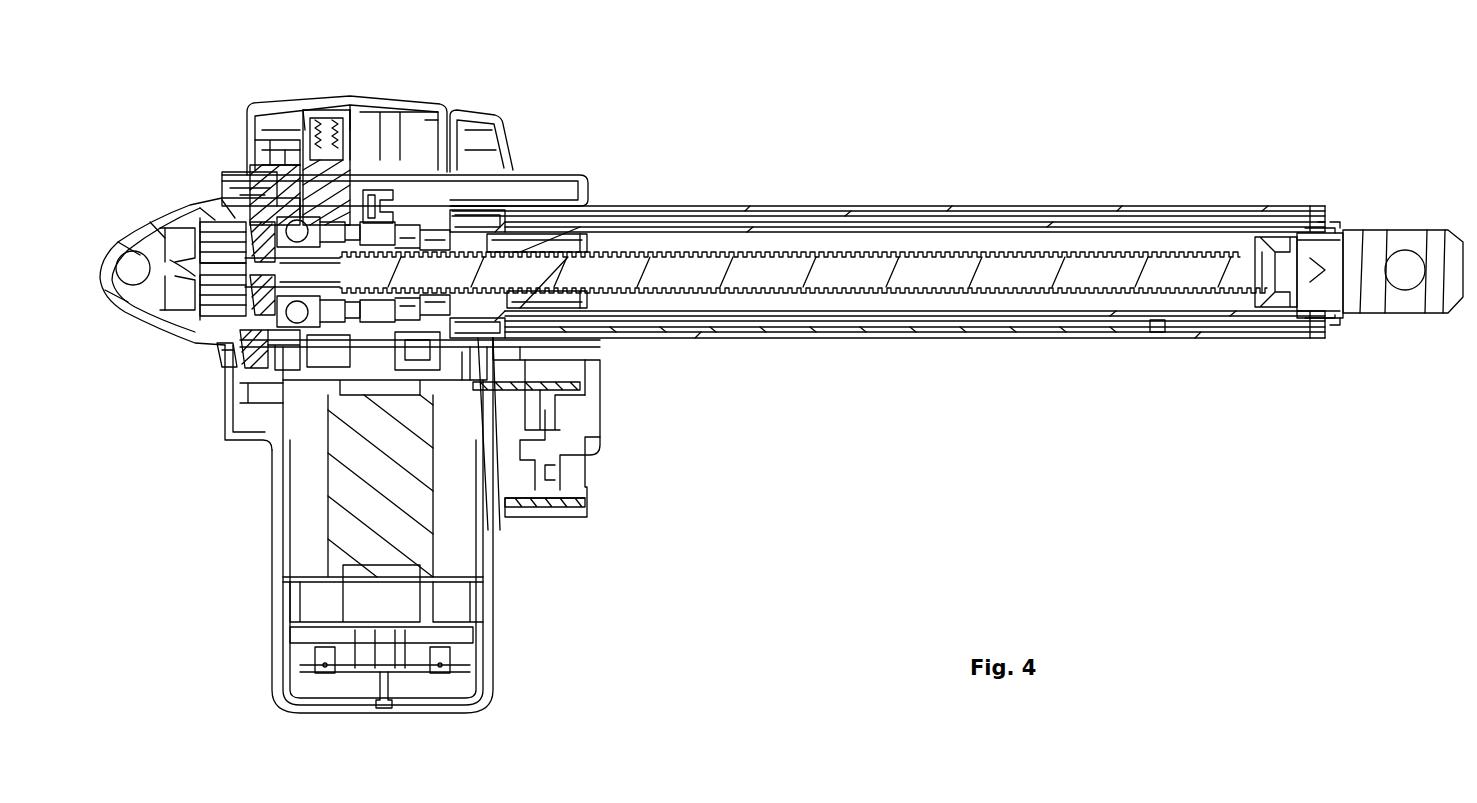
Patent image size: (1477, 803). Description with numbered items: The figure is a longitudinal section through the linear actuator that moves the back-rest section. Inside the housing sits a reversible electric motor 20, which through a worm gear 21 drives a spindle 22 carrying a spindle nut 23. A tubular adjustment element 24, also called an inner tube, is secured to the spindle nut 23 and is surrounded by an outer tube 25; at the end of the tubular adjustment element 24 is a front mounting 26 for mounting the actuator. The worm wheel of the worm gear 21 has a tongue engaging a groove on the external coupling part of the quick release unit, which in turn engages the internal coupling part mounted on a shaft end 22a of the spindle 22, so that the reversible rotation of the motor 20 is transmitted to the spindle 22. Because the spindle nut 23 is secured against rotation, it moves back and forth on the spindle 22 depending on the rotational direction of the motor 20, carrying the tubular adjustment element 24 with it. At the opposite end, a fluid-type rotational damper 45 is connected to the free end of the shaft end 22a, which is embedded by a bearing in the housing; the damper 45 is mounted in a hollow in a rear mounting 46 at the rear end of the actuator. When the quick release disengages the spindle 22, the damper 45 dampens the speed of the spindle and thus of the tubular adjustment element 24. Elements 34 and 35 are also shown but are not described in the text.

The reversible electric motor 20 is at (420, 522).
The worm gear 21 is at (380, 200).
The spindle 22 is at (940, 265).
The shaft end 22a is at (229, 358).
The spindle nut 23 is at (563, 243).
The tubular adjustment element 24 is at (745, 305).
The outer tube 25 is at (852, 210).
The front mounting 26 is at (1385, 242).
The housing cover 34 is at (505, 155).
The housing cover 35 is at (298, 108).
The rotational damper 45 is at (212, 243).
The rear mounting 46 is at (185, 323).